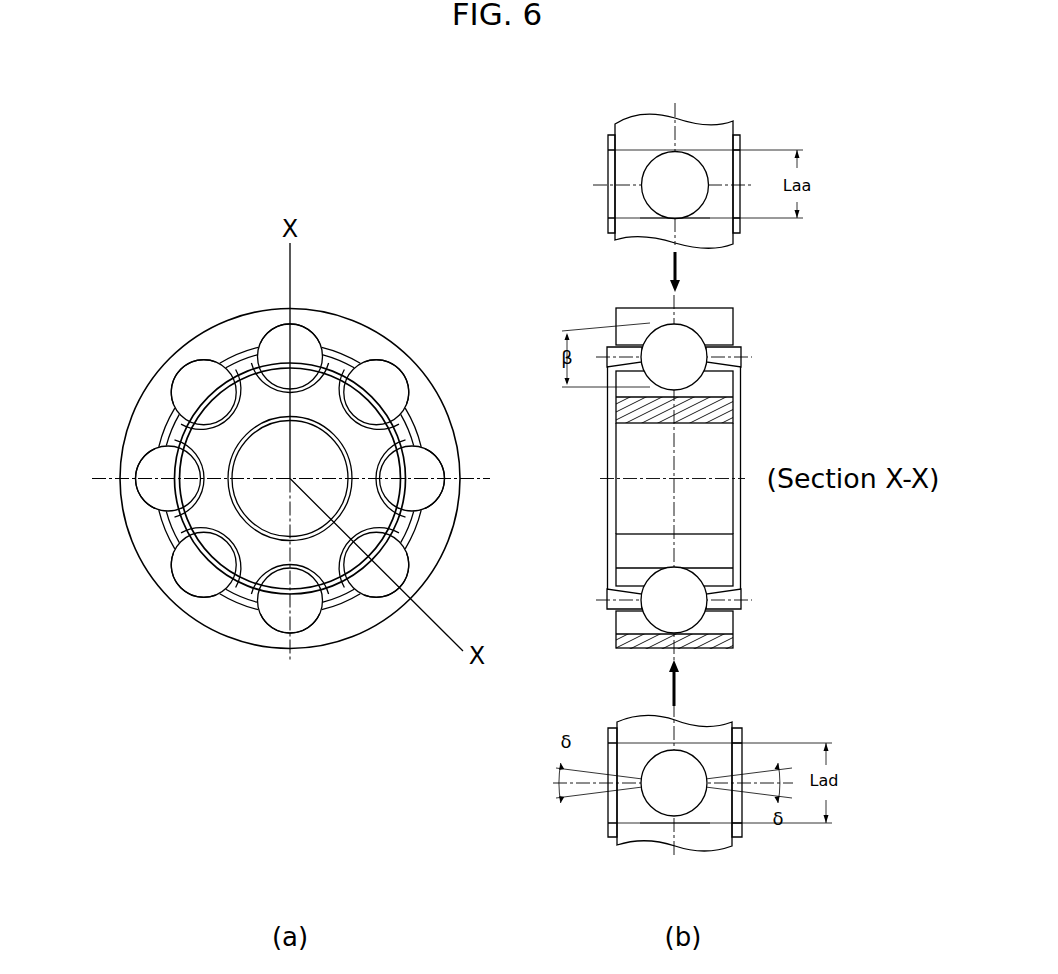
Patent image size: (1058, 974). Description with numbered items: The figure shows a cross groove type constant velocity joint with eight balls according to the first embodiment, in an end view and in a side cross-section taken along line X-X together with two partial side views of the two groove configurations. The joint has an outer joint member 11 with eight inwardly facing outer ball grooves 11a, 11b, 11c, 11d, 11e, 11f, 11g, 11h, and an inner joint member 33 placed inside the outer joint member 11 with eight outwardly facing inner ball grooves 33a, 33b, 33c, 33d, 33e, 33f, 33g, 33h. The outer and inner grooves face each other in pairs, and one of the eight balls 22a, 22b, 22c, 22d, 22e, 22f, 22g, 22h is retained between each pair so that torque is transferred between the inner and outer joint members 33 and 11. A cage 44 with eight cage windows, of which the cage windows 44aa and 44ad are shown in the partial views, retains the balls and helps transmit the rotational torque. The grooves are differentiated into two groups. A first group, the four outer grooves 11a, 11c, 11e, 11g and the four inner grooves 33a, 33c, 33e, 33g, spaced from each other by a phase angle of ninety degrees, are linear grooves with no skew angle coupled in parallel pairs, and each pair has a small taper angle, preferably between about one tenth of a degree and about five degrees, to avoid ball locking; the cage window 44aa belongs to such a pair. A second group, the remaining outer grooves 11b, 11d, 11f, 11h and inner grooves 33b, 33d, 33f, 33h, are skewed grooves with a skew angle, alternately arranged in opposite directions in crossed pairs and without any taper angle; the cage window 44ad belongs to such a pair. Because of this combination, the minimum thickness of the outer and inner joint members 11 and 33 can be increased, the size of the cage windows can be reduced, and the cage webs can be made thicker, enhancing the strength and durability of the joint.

The outer joint member 11 is at (253, 318).
The outer ball groove 11a is at (305, 322).
The outer ball groove 11b is at (421, 406).
The outer ball groove 11c is at (449, 491).
The outer ball groove 11d is at (421, 562).
The outer ball groove 11e is at (321, 641).
The outer ball groove 11f is at (170, 586).
The outer ball groove 11g is at (129, 462).
The outer ball groove 11h is at (156, 373).
The ball 22a is at (320, 350).
The ball 22b is at (406, 386).
The ball 22c is at (441, 472).
The ball 22d is at (393, 586).
The ball 22e is at (290, 630).
The ball 22f is at (195, 585).
The ball 22g is at (141, 482).
The ball 22h is at (181, 384).
The inner joint member 33 is at (283, 348).
The inner ball groove 33a is at (336, 383).
The inner ball groove 33b is at (358, 368).
The inner ball groove 33c is at (396, 468).
The inner ball groove 33d is at (366, 610).
The inner ball groove 33e is at (266, 616).
The inner ball groove 33f is at (223, 600).
The inner ball groove 33g is at (192, 502).
The inner ball groove 33h is at (216, 405).
The cage 44 is at (232, 350).
The cage window 44aa is at (708, 220).
The cage window 44ad is at (712, 812).